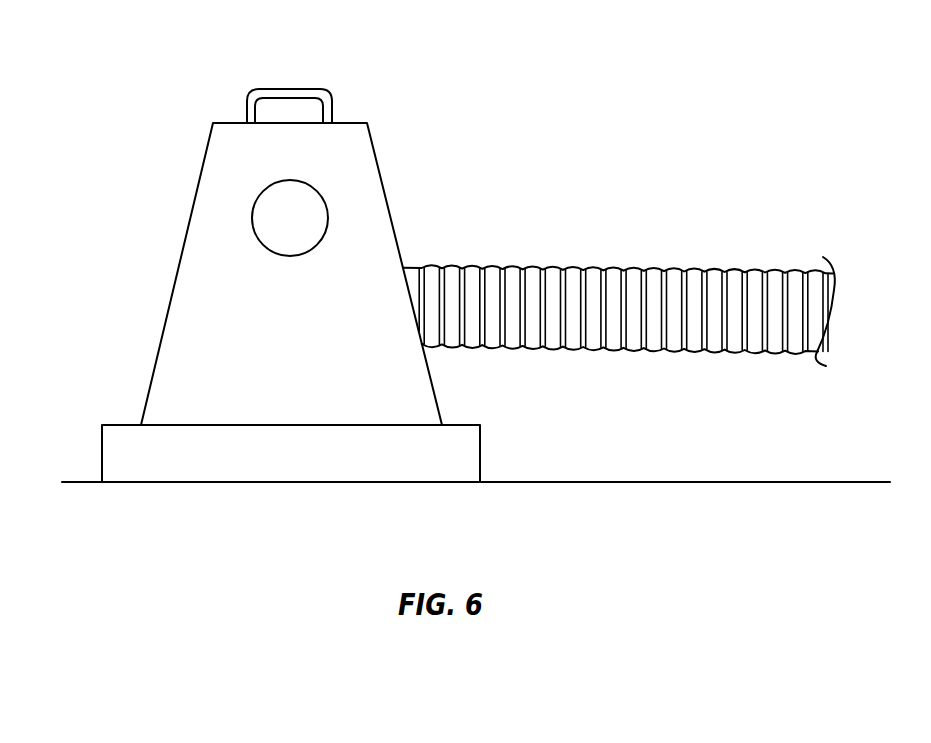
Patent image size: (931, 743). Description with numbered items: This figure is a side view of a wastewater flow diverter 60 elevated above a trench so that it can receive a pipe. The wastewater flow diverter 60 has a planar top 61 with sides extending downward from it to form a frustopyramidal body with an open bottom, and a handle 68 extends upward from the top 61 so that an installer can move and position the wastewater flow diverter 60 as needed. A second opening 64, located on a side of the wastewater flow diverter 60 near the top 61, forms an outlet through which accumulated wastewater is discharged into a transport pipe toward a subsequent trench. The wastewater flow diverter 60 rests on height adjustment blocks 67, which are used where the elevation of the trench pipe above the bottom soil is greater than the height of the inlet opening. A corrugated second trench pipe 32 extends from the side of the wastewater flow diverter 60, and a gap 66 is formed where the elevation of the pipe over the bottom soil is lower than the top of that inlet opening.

The wastewater flow diverter 60 is at (410, 113).
The top 61 is at (237, 122).
The second opening 64 is at (252, 212).
The gap 66 is at (405, 250).
The height adjustment blocks 67 is at (153, 457).
The handle 68 is at (277, 90).
The second trench pipe 32 is at (645, 300).